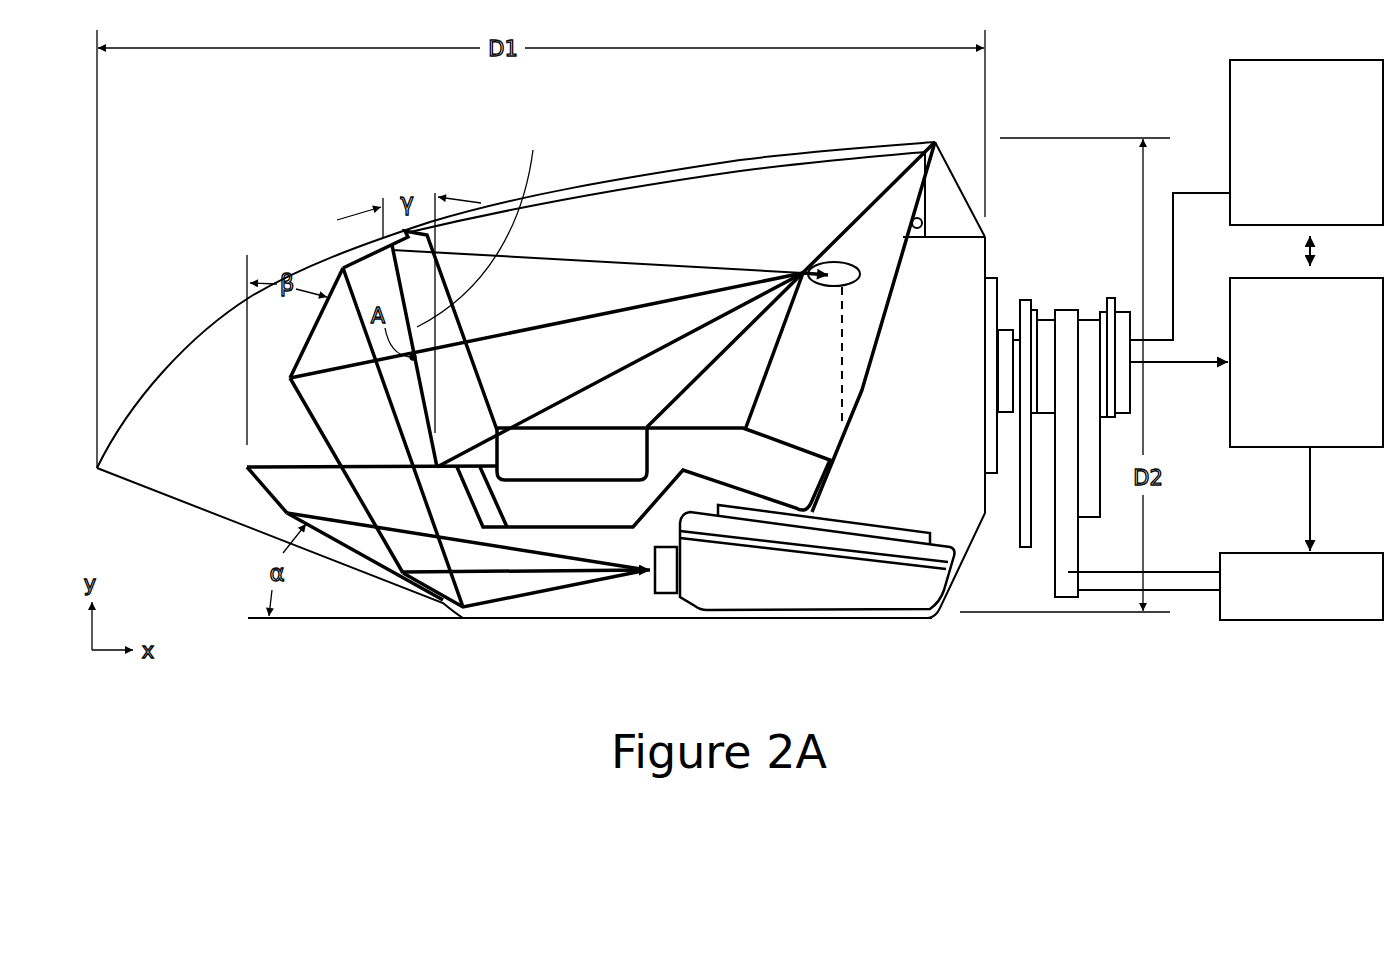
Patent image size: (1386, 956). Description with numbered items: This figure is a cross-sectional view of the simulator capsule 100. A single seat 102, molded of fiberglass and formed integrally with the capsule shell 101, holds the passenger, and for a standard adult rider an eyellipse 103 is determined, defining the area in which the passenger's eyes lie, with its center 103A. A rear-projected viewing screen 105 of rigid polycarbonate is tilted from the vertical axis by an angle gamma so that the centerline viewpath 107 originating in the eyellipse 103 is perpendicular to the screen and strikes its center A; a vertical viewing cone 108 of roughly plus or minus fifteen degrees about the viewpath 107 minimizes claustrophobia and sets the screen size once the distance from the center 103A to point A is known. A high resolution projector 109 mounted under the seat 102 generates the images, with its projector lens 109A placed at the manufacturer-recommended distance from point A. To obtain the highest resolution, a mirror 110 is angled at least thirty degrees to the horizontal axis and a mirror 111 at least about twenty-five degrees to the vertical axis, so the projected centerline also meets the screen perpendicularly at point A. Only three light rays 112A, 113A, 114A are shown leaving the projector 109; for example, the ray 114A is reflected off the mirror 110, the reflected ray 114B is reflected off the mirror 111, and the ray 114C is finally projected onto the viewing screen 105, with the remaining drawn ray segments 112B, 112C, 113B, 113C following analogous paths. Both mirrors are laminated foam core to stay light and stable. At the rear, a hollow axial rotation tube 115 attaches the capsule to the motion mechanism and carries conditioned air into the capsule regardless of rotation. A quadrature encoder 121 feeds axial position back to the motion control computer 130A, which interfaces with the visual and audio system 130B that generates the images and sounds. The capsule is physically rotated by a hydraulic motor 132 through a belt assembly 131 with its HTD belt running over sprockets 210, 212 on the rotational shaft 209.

The simulator capsule 100 is at (191, 655).
The capsule shell 101 is at (150, 488).
The seat 102 is at (750, 490).
The eyellipse 103 is at (837, 262).
The center of eyellipse 103A is at (848, 277).
The rear-projected viewing screen 105 is at (483, 223).
The centerline viewpath 107 is at (474, 340).
The vertical viewing cone 108 is at (547, 372).
The high resolution projector 109 is at (780, 610).
The projector lens 109A is at (652, 592).
The mirror 110 is at (423, 590).
The mirror 111 is at (245, 340).
The light ray 112A is at (597, 580).
The screen panel 112B is at (397, 427).
The screen panel 112C is at (370, 257).
The light ray 113A is at (545, 570).
The screen panel 113B is at (355, 510).
The screen panel 113C is at (338, 285).
The light ray 114A is at (400, 528).
The reflected ray 114B is at (253, 530).
The ray 114C is at (298, 392).
The hollow axial rotation tube 115 is at (1090, 320).
The quadrature encoder / shaft 121 is at (1048, 320).
The motion control computer 130A is at (1306, 362).
The visual and audio system 130B is at (1306, 142).
The belt assembly 131 is at (1072, 572).
The hydraulic motor 132 is at (1301, 586).
The rotational shaft 209 is at (1007, 330).
The HTD sprocket 210 is at (1060, 590).
The HTD sprocket 212 is at (1033, 400).